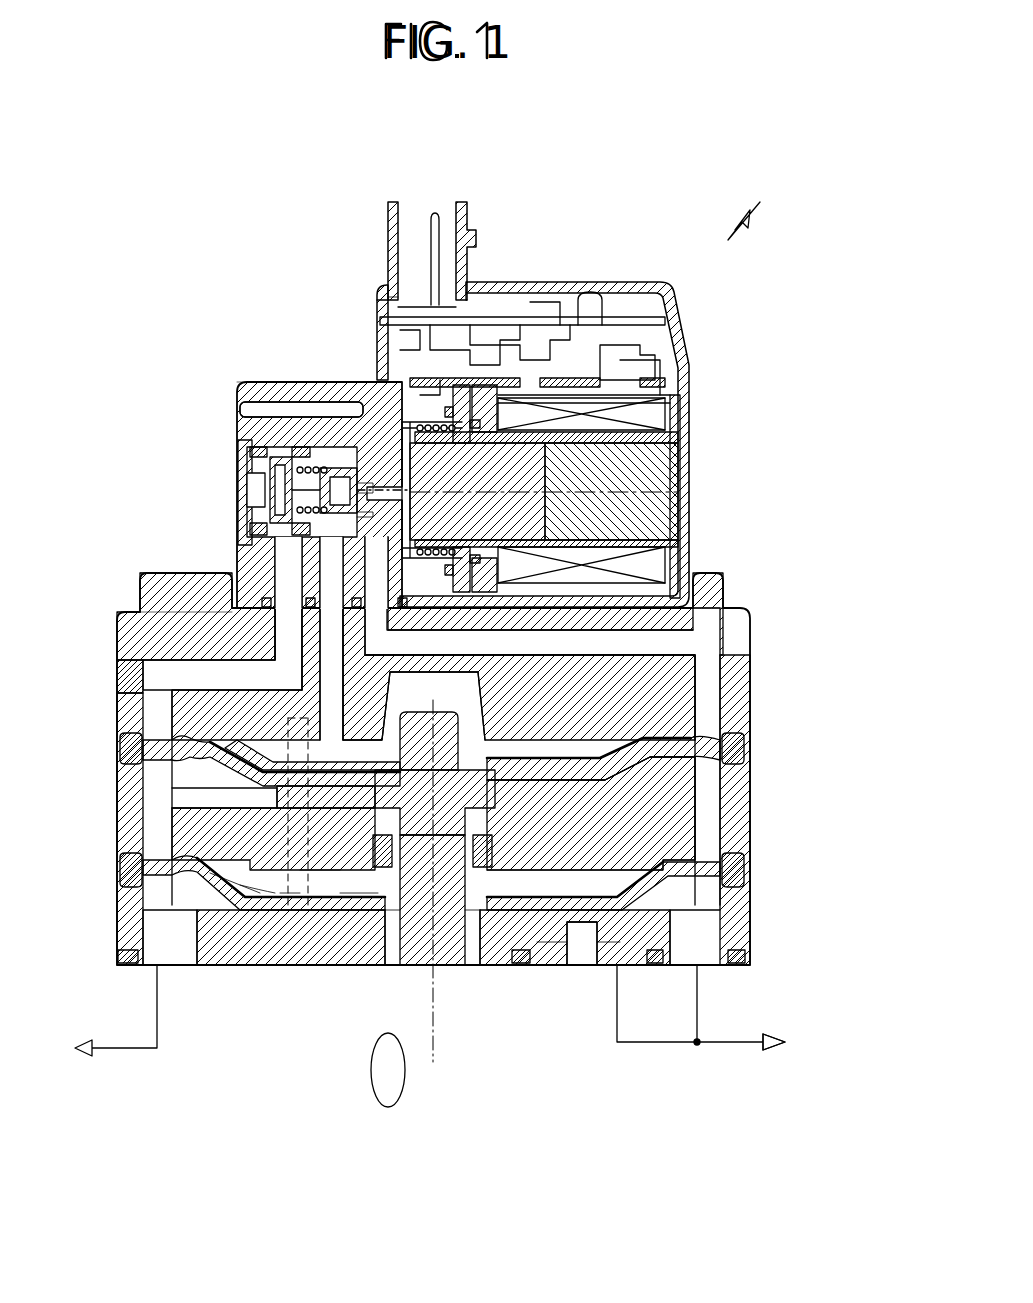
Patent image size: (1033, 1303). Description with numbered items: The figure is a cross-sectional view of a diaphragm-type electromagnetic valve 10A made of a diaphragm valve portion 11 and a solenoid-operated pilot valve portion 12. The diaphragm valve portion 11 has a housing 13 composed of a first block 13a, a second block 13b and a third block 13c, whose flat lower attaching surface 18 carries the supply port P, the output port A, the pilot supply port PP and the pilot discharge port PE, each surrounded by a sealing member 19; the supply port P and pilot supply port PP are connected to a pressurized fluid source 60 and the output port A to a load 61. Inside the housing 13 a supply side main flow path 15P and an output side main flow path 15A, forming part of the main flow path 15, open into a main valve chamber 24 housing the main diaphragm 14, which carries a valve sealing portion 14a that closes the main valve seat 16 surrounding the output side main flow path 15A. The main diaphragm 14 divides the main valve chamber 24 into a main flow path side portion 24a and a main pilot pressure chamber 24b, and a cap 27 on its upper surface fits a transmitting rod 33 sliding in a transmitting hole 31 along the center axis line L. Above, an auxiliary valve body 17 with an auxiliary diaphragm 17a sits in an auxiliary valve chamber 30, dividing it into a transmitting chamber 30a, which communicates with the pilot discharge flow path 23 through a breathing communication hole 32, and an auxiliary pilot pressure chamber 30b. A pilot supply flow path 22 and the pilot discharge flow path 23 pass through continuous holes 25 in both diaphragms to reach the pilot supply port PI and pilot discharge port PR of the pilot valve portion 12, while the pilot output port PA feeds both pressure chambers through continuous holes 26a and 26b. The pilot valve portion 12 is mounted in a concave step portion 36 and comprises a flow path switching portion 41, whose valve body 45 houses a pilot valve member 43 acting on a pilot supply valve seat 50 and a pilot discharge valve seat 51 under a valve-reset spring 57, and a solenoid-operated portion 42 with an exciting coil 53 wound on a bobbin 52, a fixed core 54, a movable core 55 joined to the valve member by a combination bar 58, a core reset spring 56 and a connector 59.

The electromagnetic valve 10A is at (763, 203).
The diaphragm valve portion 11 is at (757, 703).
The pilot valve portion 12 is at (752, 430).
The housing 13 is at (148, 550).
The first block 13a is at (125, 915).
The second block 13b is at (120, 790).
The third block 13c is at (165, 615).
The main diaphragm 14 is at (225, 965).
The valve sealing portion 14a is at (320, 965).
The main flow path 15 is at (580, 979).
The output side main flow path 15A is at (347, 965).
The supply side main flow path 15P is at (533, 965).
The main valve seat 16 is at (490, 965).
The auxiliary valve body 17 is at (680, 755).
The auxiliary diaphragm 17a is at (700, 790).
The attaching surface 18 is at (135, 968).
The sealing member 19 is at (125, 957).
The pilot supply flow path 22 is at (720, 945).
The pilot discharge flow path 23 is at (130, 870).
The main valve chamber 24 is at (700, 900).
The main flow path side portion 24a is at (285, 965).
The main pilot pressure chamber 24b is at (258, 965).
The continuous holes 25 is at (735, 873).
The continuous hole 26a is at (238, 965).
The continuous hole 26b is at (330, 655).
The cap 27 is at (445, 965).
The auxiliary valve chamber 30 is at (620, 747).
The transmitting chamber 30a is at (700, 835).
The auxiliary pilot pressure chamber 30b is at (700, 618).
The transmitting hole 31 is at (372, 965).
The breathing communication hole 32 is at (180, 825).
The transmitting rod 33 is at (640, 868).
The concave step portion 36 is at (660, 570).
The flow path switching portion 41 is at (228, 334).
The solenoid-operated portion 42 is at (586, 255).
The pilot valve member 43 is at (272, 385).
The valve body 45 is at (250, 410).
The pilot supply valve seat 50 is at (332, 468).
The pilot discharge valve seat 51 is at (300, 475).
The bobbin 52 is at (684, 430).
The exciting coil 53 is at (645, 405).
The fixed core 54 is at (655, 500).
The movable core 55 is at (512, 420).
The core reset spring 56 is at (366, 372).
The valve-reset spring 57 is at (250, 520).
The combination bar 58 is at (344, 420).
The connector 59 is at (412, 215).
The pressurized fluid source 60 is at (775, 1050).
The load 61 is at (388, 1108).
The output port A is at (432, 977).
The center axis line L is at (430, 893).
The supply port P is at (630, 968).
The pilot supply port PP is at (712, 968).
The pilot discharge port PE is at (180, 968).
The pilot discharge port PR is at (300, 599).
The pilot output port PA is at (343, 599).
The pilot supply port PI is at (387, 599).